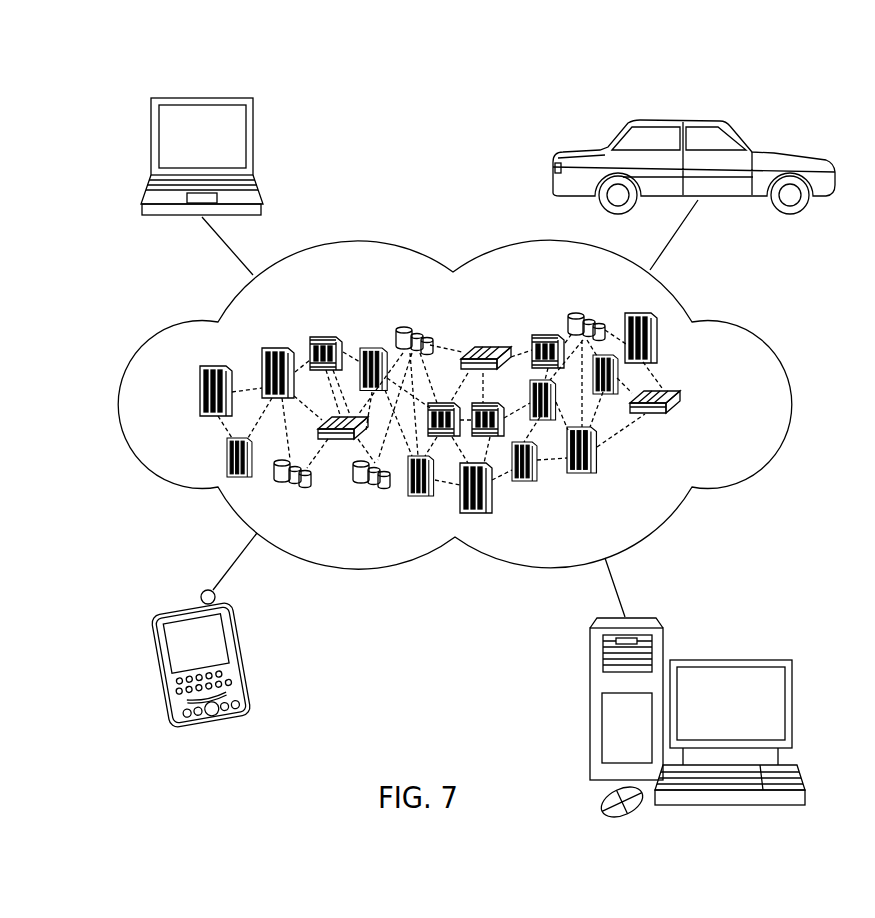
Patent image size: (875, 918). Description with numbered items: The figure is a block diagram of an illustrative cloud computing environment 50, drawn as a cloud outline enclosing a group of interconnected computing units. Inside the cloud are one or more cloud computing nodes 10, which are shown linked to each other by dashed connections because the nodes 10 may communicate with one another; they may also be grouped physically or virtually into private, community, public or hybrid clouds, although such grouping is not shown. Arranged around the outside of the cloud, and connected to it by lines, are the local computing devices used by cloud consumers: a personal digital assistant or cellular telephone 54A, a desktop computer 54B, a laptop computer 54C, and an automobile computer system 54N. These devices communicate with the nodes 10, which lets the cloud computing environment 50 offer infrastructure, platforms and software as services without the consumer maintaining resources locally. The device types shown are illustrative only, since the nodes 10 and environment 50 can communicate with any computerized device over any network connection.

The cloud computing node 10 is at (686, 402).
The cloud computing environment 50 is at (743, 322).
The personal digital assistant or cellular telephone 54A is at (183, 605).
The desktop computer 54B is at (730, 660).
The laptop computer 54C is at (202, 97).
The automobile computer system 54N is at (677, 118).